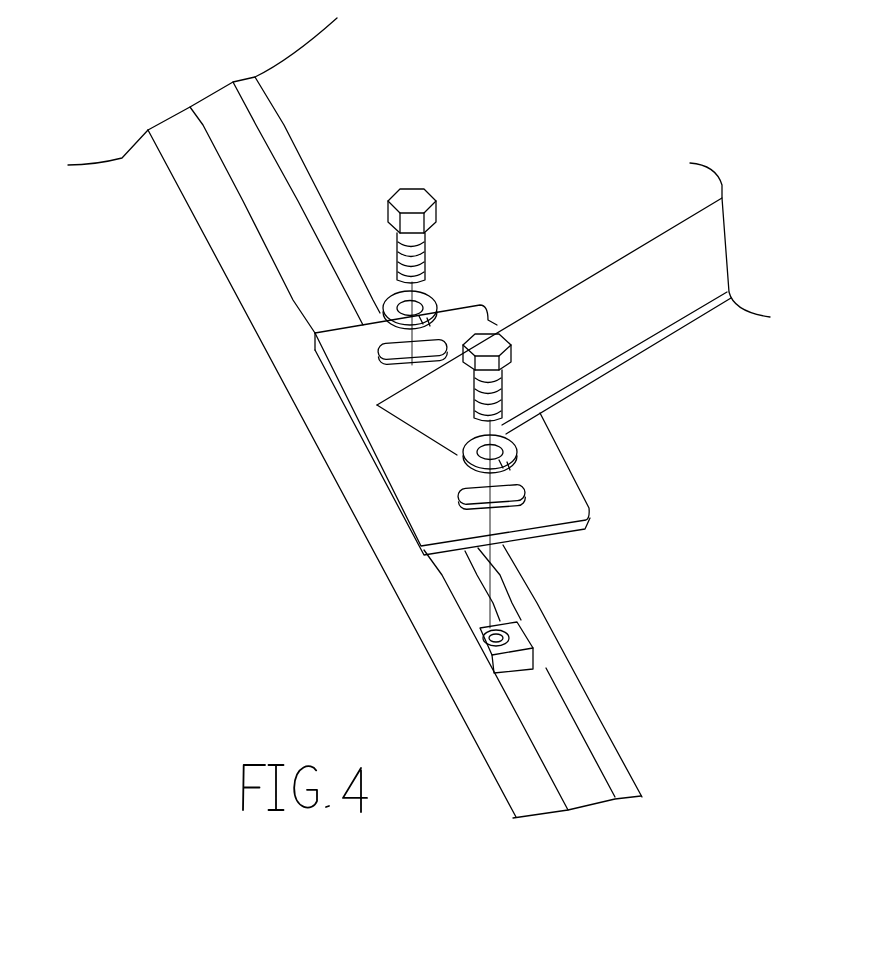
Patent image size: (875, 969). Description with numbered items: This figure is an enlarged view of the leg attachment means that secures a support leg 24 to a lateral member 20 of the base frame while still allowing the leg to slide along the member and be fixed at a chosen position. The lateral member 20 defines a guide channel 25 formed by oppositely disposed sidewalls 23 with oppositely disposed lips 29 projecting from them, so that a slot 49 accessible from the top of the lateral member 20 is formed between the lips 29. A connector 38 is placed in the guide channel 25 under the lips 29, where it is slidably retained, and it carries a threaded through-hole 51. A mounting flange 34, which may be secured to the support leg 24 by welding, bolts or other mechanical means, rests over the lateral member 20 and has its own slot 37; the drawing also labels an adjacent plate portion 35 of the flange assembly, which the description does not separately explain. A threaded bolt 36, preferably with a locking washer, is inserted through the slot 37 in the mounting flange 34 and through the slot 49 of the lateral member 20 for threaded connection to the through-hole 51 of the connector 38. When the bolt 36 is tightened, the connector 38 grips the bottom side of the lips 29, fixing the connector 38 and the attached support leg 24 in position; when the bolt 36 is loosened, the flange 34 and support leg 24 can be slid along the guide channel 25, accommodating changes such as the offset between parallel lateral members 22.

The lateral member 20 is at (515, 785).
The lateral members 22 is at (280, 147).
The sidewalls 23 is at (337, 233).
The support leg 24 is at (595, 290).
The guide channel 25 is at (267, 193).
The lips 29 is at (583, 733).
The mounting flange 34 is at (567, 483).
The base plate 35 is at (408, 463).
The threaded bolt 36 is at (427, 248).
The slot 37 is at (520, 482).
The connector 38 is at (527, 637).
The slot 49 is at (497, 593).
The threaded through-hole 51 is at (478, 630).